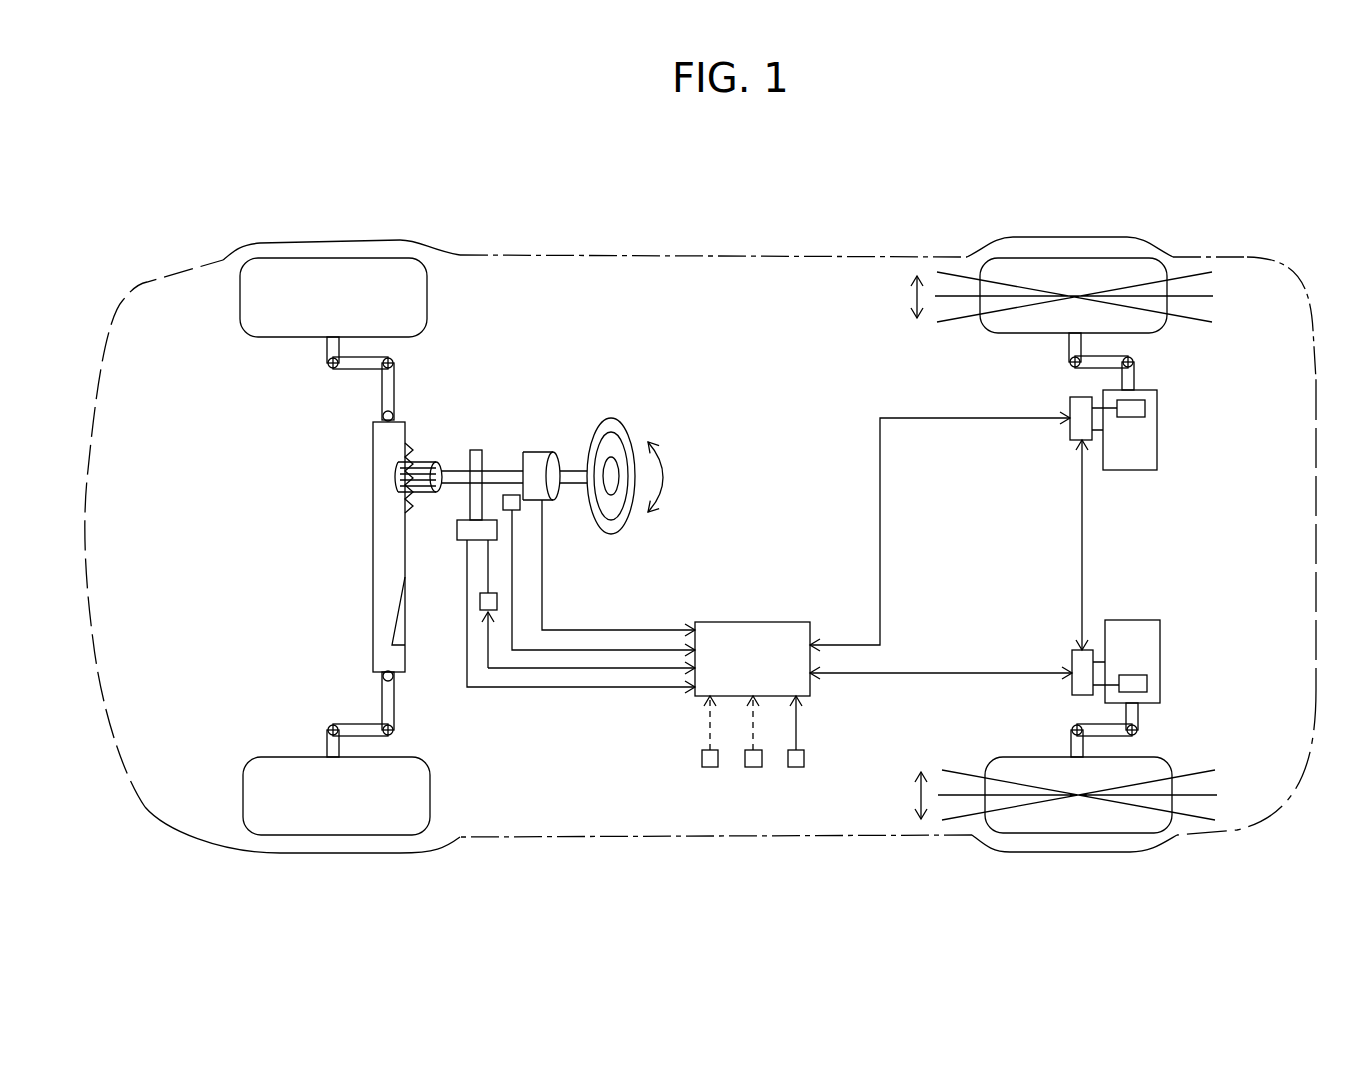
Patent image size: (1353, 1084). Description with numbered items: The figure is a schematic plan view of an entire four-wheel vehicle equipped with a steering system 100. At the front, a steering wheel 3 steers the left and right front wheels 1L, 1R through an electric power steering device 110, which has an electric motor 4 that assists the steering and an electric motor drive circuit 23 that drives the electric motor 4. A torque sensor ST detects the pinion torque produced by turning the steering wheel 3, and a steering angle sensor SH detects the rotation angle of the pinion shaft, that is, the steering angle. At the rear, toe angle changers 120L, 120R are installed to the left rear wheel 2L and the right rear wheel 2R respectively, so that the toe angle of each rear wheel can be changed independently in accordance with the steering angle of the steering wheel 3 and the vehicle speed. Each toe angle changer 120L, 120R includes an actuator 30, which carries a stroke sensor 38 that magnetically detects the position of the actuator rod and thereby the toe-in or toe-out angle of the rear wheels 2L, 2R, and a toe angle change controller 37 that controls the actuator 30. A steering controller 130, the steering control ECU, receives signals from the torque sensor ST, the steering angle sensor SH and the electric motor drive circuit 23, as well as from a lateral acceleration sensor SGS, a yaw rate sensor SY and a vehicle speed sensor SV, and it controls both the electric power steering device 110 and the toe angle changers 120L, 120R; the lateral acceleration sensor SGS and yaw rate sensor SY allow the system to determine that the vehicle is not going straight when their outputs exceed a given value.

The steering system 100 is at (912, 225).
The right front wheel 1R is at (350, 258).
The left front wheel 1L is at (353, 835).
The right rear wheel 2R is at (1103, 257).
The left rear wheel 2L is at (1108, 833).
The electric power steering device 110 is at (472, 430).
The steering wheel 3 is at (632, 450).
The electric motor 4 is at (457, 530).
The electric motor drive circuit 23 is at (497, 600).
The torque sensor ST is at (543, 452).
The steering angle sensor SH is at (520, 503).
The steering controller 130 is at (760, 622).
The toe angle changer 120R is at (1167, 462).
The toe angle changer 120L is at (1168, 632).
The actuator 30 is at (1157, 426).
The toe angle change controller 37 is at (1070, 430).
The stroke sensor 38 is at (1158, 405).
The lateral acceleration sensor SGS is at (715, 767).
The yaw rate sensor SY is at (755, 767).
The vehicle speed sensor SV is at (798, 767).